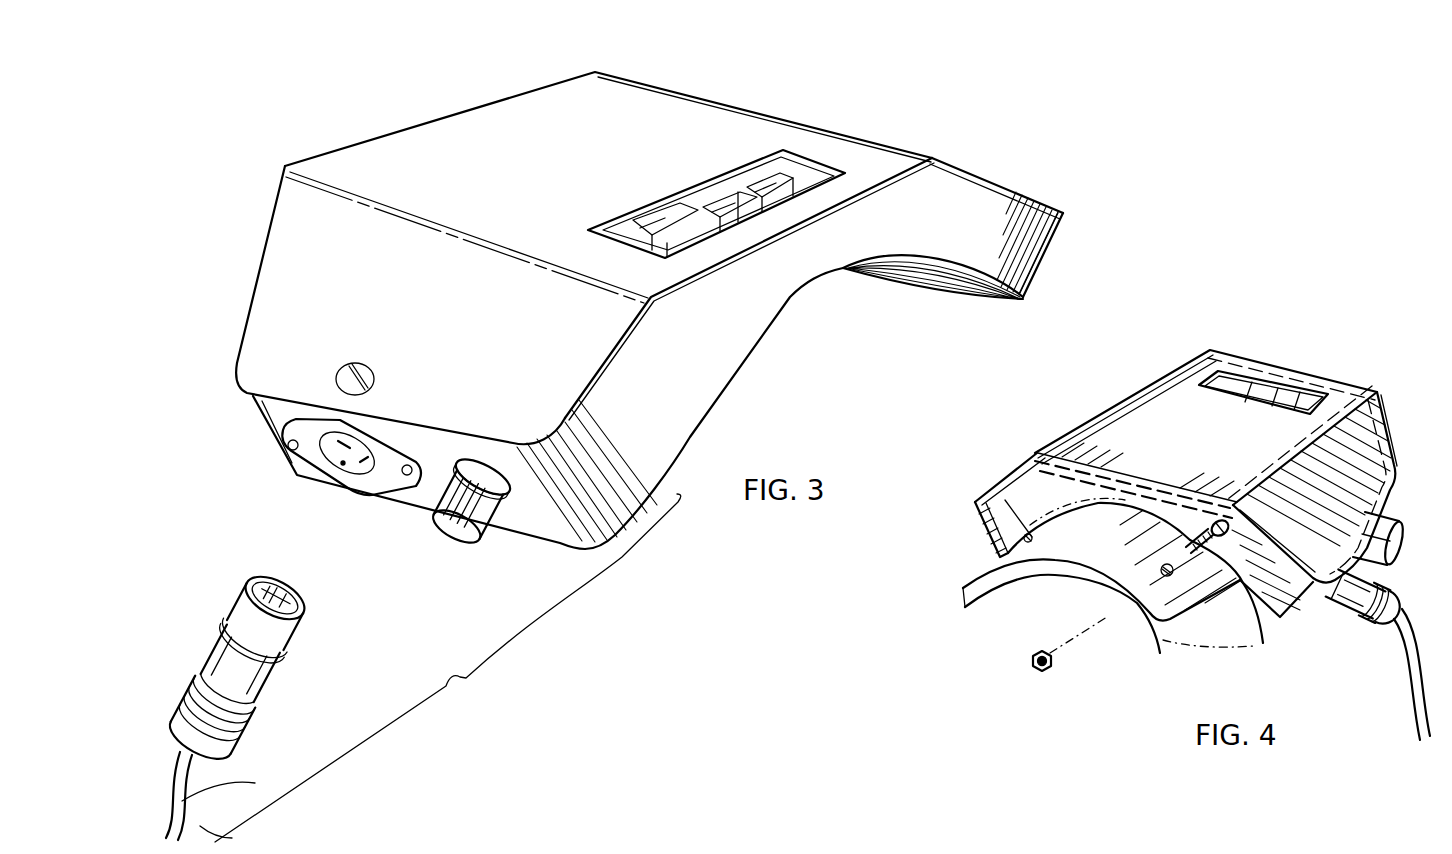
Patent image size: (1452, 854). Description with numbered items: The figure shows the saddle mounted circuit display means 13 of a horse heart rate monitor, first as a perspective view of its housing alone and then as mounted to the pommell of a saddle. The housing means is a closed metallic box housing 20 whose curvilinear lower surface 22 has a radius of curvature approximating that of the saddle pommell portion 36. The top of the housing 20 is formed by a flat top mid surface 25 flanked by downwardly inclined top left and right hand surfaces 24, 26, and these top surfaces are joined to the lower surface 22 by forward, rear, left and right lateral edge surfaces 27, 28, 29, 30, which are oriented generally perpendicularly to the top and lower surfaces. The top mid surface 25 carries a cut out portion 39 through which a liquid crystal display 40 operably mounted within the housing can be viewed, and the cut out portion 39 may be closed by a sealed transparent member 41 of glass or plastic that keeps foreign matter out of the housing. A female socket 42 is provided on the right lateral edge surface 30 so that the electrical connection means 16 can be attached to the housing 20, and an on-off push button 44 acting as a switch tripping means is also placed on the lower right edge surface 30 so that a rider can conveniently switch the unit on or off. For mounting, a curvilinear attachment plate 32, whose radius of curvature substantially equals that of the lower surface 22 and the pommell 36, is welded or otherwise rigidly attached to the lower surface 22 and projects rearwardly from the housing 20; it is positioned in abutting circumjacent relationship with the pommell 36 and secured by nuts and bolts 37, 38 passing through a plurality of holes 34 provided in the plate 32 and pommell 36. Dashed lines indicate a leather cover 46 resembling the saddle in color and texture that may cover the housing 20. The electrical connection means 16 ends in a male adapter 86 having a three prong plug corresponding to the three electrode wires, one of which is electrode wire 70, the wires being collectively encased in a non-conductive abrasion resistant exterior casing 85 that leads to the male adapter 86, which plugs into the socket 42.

In FIG. 3, the saddle mounted circuit display means 13 is at (920, 117).
In FIG. 4, the saddle mounted circuit display means 13 is at (1298, 303).
In FIG. 3, the electrical connection means 16 is at (280, 690).
In FIG. 4, the electrical connection means 16 is at (1408, 638).
In FIG. 3, the housing 20 is at (718, 84).
In FIG. 4, the housing 20 is at (1110, 394).
In FIG. 3, the curvilinear lower surface 22 is at (930, 273).
In FIG. 3, the downwardly inclined top left hand surface 24 is at (990, 187).
In FIG. 4, the downwardly inclined top left hand surface 24 is at (1012, 480).
In FIG. 3, the flat top mid surface 25 is at (403, 145).
In FIG. 4, the flat top mid surface 25 is at (1180, 380).
In FIG. 3, the downwardly inclined top right hand surface 26 is at (270, 270).
In FIG. 4, the downwardly inclined top right hand surface 26 is at (1380, 458).
In FIG. 3, the forward lateral edge surface 27 is at (699, 393).
In FIG. 4, the rear lateral edge surface 28 is at (977, 524).
In FIG. 3, the left lateral edge surface 29 is at (1046, 260).
In FIG. 3, the right lateral edge surface 30 is at (400, 493).
In FIG. 4, the curvilinear attachment plate 32 is at (982, 575).
In FIG. 4, the holes 34 is at (1028, 542).
In FIG. 4, the saddle pommell portion 36 is at (1183, 633).
In FIG. 4, the nuts 37 is at (1223, 553).
In FIG. 4, the bolts 38 is at (1047, 673).
In FIG. 3, the cut out portion 39 is at (793, 167).
In FIG. 4, the cut out portion 39 is at (1283, 395).
In FIG. 3, the liquid crystal display 40 is at (783, 165).
In FIG. 4, the liquid crystal display 40 is at (1240, 387).
In FIG. 3, the sealed transparent member 41 is at (823, 173).
In FIG. 3, the female socket 42 is at (320, 457).
In FIG. 3, the on-off push button 44 is at (467, 537).
In FIG. 4, the on-off push button 44 is at (1393, 540).
In FIG. 4, the leather cover 46 is at (1378, 462).
In FIG. 4, the electrode wire 70 is at (1383, 597).
In FIG. 3, the exterior casing 85 is at (308, 765).
In FIG. 3, the male adapter 86 is at (209, 633).